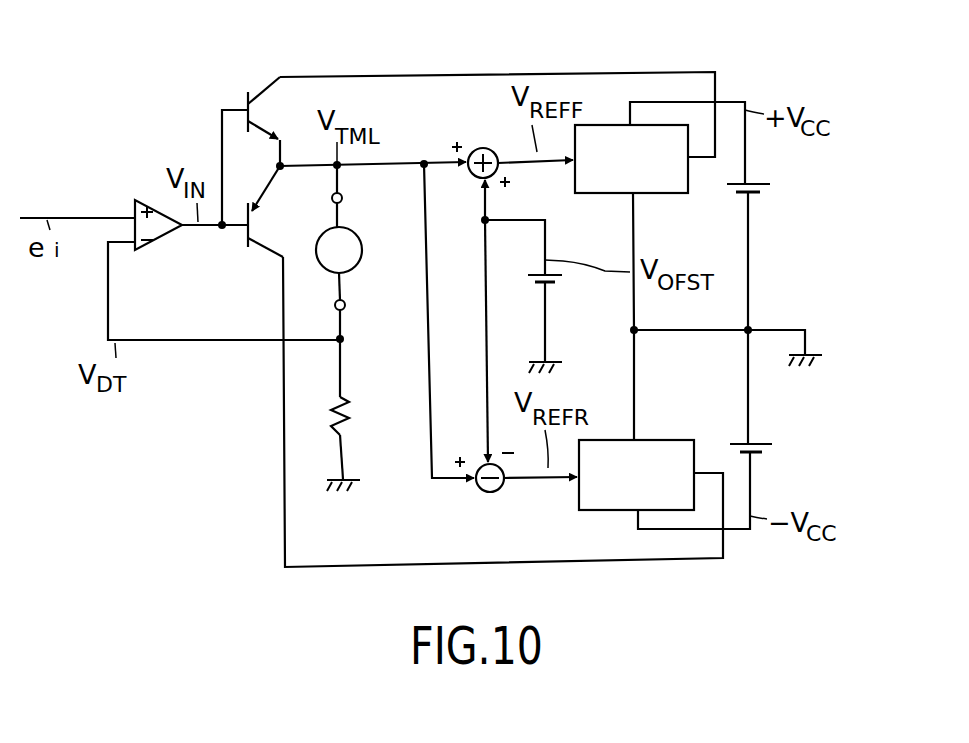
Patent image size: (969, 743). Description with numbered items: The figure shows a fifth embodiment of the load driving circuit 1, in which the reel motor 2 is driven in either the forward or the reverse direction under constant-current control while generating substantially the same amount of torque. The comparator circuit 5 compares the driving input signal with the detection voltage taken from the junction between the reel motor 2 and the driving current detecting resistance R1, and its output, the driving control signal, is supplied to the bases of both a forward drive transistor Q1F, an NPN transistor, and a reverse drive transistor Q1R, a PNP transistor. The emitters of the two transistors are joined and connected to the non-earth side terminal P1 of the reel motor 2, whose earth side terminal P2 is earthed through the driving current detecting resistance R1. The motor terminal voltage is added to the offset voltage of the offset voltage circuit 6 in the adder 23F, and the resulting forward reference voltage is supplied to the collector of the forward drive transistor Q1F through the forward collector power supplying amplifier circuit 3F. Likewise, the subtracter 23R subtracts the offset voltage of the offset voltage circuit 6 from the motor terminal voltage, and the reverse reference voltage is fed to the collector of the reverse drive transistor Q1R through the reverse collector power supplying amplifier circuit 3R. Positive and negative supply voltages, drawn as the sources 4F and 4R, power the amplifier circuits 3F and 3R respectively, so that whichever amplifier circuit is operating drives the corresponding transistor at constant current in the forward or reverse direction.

The load driving circuit 1 is at (196, 432).
The comparator circuit 5 is at (163, 240).
The forward drive transistor Q1F is at (247, 95).
The reverse drive transistor Q1R is at (252, 245).
The non-earth side terminal P1 is at (343, 197).
The reel motor 2 is at (360, 259).
The earth side terminal P2 is at (346, 304).
The driving current detecting resistance R1 is at (351, 420).
The adder 23F is at (483, 150).
The subtracter 23R is at (493, 493).
The forward collector power supplying amplifier circuit 3F is at (600, 195).
The reverse collector power supplying amplifier circuit 3R is at (593, 512).
The power supply battery (positive) 4F is at (769, 186).
The power supply battery (negative) 4R is at (770, 445).
The offset voltage circuit 6 is at (562, 278).